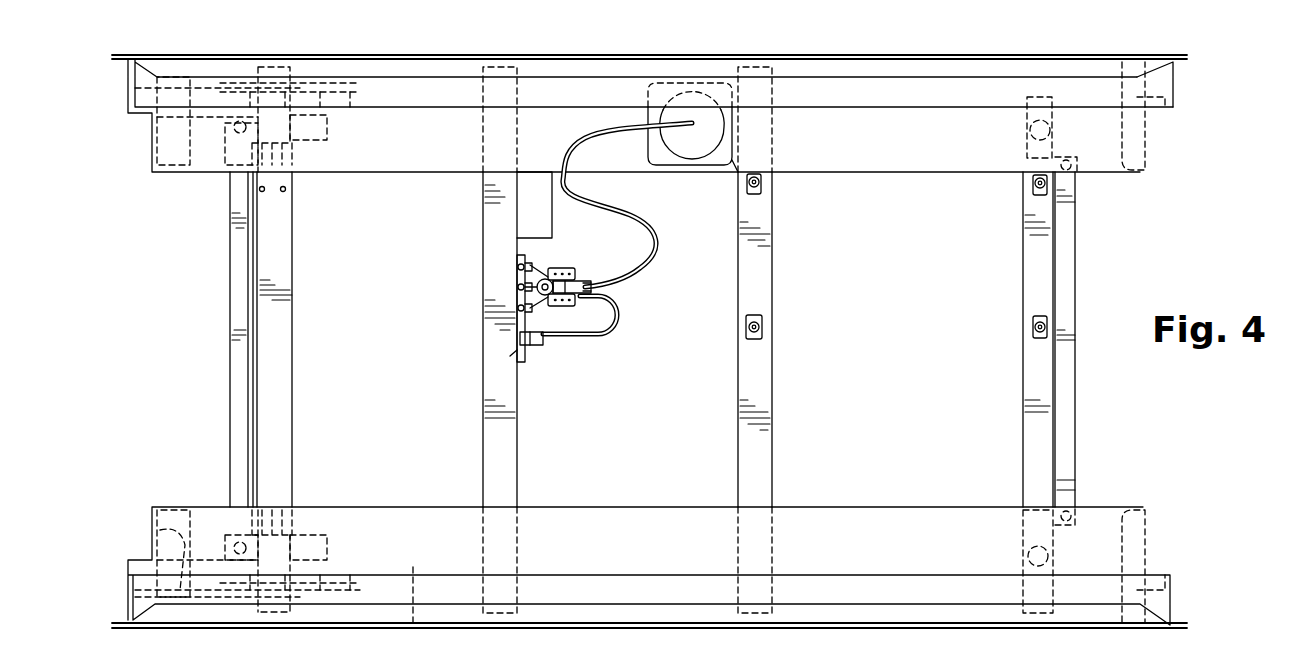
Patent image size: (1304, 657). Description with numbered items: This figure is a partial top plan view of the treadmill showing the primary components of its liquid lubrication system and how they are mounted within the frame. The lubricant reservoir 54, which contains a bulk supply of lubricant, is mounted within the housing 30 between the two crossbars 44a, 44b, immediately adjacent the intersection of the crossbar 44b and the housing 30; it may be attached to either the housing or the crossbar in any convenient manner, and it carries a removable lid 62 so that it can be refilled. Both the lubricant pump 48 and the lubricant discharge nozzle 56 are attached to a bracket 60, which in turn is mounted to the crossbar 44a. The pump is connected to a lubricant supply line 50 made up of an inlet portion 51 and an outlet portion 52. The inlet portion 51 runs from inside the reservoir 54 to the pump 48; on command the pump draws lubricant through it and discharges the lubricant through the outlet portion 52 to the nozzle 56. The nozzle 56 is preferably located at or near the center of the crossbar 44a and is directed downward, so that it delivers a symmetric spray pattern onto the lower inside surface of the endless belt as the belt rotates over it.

The housing 30 is at (628, 55).
The crossbar 44a is at (513, 66).
The crossbar 44b is at (756, 66).
The lubricant pump 48 is at (607, 291).
The lubricant supply line 50 is at (596, 266).
The inlet portion 51 is at (648, 218).
The outlet portion 52 is at (620, 324).
The lubricant reservoir 54 is at (675, 85).
The lubricant discharge nozzle 56 is at (545, 345).
The bracket 60 is at (530, 362).
The removable lid 62 is at (705, 150).